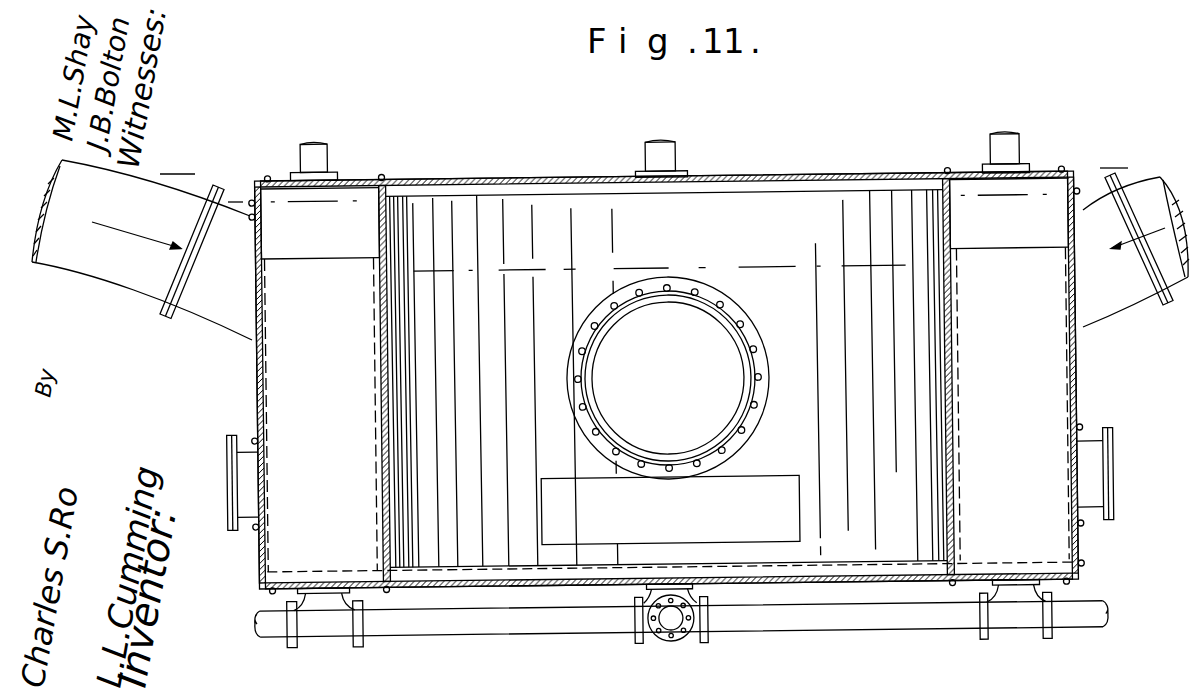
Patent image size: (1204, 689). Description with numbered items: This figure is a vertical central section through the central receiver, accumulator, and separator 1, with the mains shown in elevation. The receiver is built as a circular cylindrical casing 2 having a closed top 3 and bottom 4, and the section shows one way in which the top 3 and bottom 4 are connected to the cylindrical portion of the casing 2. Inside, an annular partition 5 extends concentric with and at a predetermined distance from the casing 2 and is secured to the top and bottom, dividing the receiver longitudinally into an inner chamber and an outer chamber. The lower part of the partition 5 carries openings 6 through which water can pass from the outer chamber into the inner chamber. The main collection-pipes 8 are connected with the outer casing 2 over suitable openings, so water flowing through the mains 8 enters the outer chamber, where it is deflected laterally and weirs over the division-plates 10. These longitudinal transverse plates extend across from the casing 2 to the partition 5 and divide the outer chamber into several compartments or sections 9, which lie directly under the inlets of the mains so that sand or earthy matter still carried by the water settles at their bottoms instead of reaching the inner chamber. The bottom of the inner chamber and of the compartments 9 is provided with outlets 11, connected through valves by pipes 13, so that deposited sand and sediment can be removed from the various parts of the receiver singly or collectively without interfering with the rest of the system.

The central receiver, accumulator, and separator 1 is at (685, 380).
The circular cylindrical casing 2 is at (254, 371).
The closed top 3 is at (664, 159).
The bottom 4 is at (477, 585).
The annular partition 5 is at (389, 238).
The openings 6 is at (670, 509).
The main collection-pipes 8 is at (610, 250).
The compartments or sections 9 is at (665, 218).
The division-plates 10 is at (666, 409).
The outlets 11 is at (325, 597).
The pipes 13 is at (682, 625).